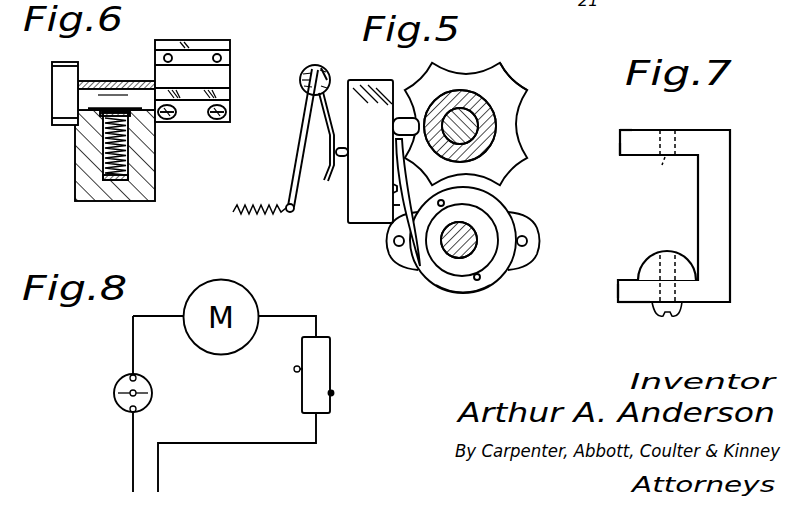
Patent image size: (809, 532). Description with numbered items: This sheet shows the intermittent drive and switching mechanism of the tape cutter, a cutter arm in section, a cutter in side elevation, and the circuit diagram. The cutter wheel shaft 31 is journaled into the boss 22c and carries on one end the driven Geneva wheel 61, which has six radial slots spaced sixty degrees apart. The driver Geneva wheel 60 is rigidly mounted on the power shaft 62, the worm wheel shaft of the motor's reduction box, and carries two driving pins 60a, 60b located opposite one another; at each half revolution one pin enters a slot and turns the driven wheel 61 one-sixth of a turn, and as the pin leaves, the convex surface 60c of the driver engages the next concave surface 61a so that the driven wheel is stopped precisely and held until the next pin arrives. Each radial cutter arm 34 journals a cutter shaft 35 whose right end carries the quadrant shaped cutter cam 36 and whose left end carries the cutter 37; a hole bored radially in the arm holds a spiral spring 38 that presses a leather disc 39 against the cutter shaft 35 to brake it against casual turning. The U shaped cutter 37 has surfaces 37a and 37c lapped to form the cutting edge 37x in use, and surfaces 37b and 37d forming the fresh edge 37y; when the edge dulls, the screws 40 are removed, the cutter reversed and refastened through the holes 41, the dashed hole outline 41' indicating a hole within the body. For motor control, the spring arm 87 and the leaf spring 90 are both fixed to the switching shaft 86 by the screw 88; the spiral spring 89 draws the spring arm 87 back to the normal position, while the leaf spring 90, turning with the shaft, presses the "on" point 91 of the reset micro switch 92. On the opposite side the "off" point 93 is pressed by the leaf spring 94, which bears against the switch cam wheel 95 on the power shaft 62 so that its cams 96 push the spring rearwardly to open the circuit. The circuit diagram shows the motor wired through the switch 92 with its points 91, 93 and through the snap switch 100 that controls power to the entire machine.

In FIG. 5, the boss 22c is at (483, 103).
In FIG. 5, the cutter wheel shaft 31 is at (490, 130).
In FIG. 6, the cutter arm 34 is at (152, 165).
In FIG. 6, the cutter shaft 35 is at (114, 100).
In FIG. 7, the cutter shaft 35 is at (640, 262).
In FIG. 6, the cutter cam 36 is at (60, 95).
In FIG. 6, the cutter 37 is at (232, 46).
In FIG. 7, the cutter 37 is at (718, 193).
In FIG. 7, the surface (land) 37a is at (615, 290).
In FIG. 7, the surface (land) 37b is at (620, 150).
In FIG. 7, the surface 37c is at (637, 304).
In FIG. 7, the surface 37d is at (640, 132).
In FIG. 7, the cutting edge 37x is at (620, 301).
In FIG. 7, the cutting edge 37y is at (618, 130).
In FIG. 6, the spiral spring 38 is at (105, 160).
In FIG. 6, the leather disc 39 is at (105, 115).
In FIG. 6, the screws 40 is at (216, 119).
In FIG. 7, the screws 40 is at (680, 308).
In FIG. 6, the holes 41 is at (192, 38).
In FIG. 7, the hole 41' is at (644, 173).
In FIG. 5, the driver Geneva wheel 60 is at (497, 210).
In FIG. 5, the driving pin 60a is at (391, 243).
In FIG. 5, the driving pin 60b is at (540, 243).
In FIG. 5, the convex surface 60c is at (446, 294).
In FIG. 5, the driven Geneva wheel 61 is at (463, 75).
In FIG. 5, the concave surface 61a is at (505, 92).
In FIG. 5, the power shaft 62 is at (447, 253).
In FIG. 5, the switching shaft 86 is at (301, 73).
In FIG. 5, the spring arm 87 is at (302, 135).
In FIG. 5, the screw 88 is at (336, 60).
In FIG. 5, the spiral spring 89 is at (268, 202).
In FIG. 5, the leaf spring 90 is at (318, 170).
In FIG. 5, the "on" point 91 is at (352, 152).
In FIG. 8, the "on" point 91 is at (295, 372).
In FIG. 5, the reset micro switch 92 is at (377, 97).
In FIG. 8, the reset micro switch 92 is at (332, 360).
In FIG. 5, the "off" point 93 is at (393, 188).
In FIG. 8, the "off" point 93 is at (335, 393).
In FIG. 5, the leaf spring 94 is at (395, 205).
In FIG. 5, the switch cam wheel 95 is at (458, 267).
In FIG. 5, the cams 96 is at (443, 205).
In FIG. 8, the snap switch 100 is at (116, 386).